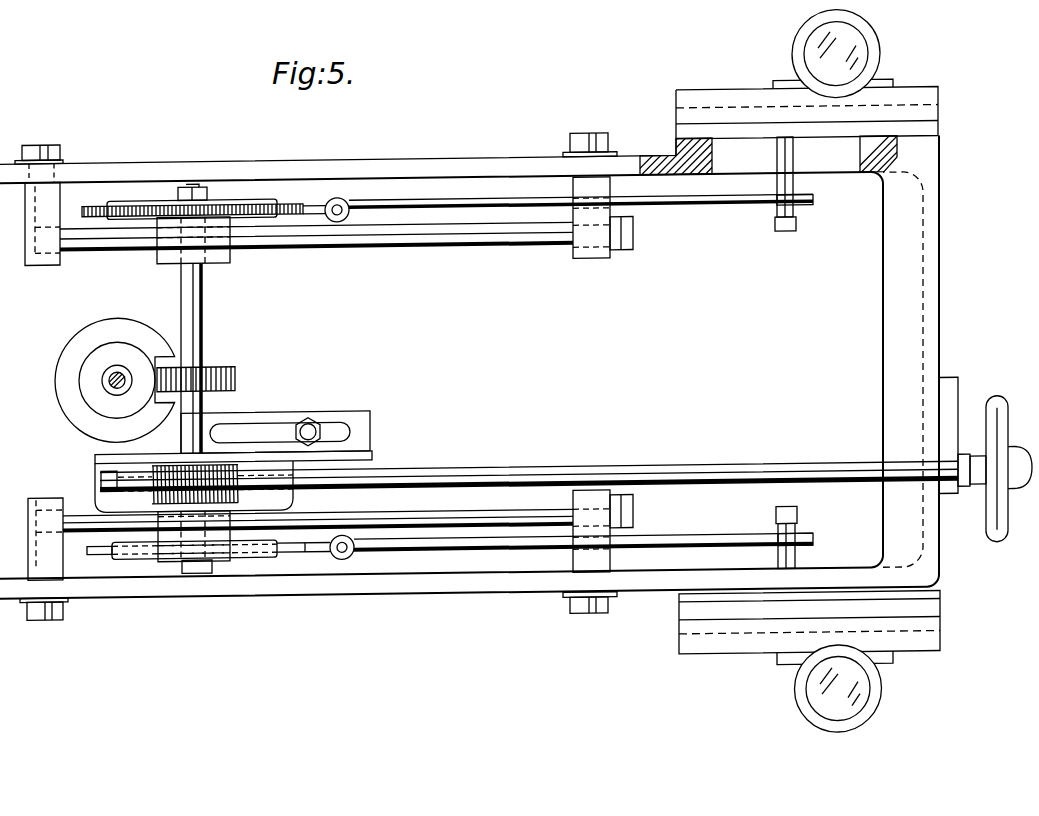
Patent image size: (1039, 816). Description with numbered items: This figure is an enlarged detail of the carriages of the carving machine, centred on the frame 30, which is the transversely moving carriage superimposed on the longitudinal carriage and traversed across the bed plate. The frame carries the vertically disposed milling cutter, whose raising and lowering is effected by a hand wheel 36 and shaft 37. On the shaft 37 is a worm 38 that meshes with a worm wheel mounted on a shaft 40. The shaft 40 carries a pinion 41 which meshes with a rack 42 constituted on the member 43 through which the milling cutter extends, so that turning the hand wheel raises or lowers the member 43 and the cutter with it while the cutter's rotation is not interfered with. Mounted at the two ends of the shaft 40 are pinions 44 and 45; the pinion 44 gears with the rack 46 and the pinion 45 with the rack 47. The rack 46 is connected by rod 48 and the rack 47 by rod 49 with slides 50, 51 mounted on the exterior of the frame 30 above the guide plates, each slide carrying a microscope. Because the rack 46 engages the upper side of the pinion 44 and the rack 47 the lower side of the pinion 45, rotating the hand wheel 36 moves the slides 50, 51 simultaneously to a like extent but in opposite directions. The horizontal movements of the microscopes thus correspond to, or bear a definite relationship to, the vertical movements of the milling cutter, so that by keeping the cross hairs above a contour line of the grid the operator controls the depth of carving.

The frame 30 is at (474, 353).
The hand wheel 36 is at (990, 416).
The shaft 37 is at (565, 476).
The worm 38 is at (100, 477).
The shaft 40 is at (195, 304).
The pinion 41 is at (232, 371).
The rack 42 is at (157, 373).
The member 43 is at (88, 377).
The pinion 44 is at (168, 548).
The pinion 45 is at (162, 196).
The rack 46 is at (292, 550).
The rack 47 is at (310, 204).
The rod 48 is at (418, 547).
The rod 49 is at (400, 203).
The slide 50 is at (733, 643).
The slide 51 is at (715, 100).